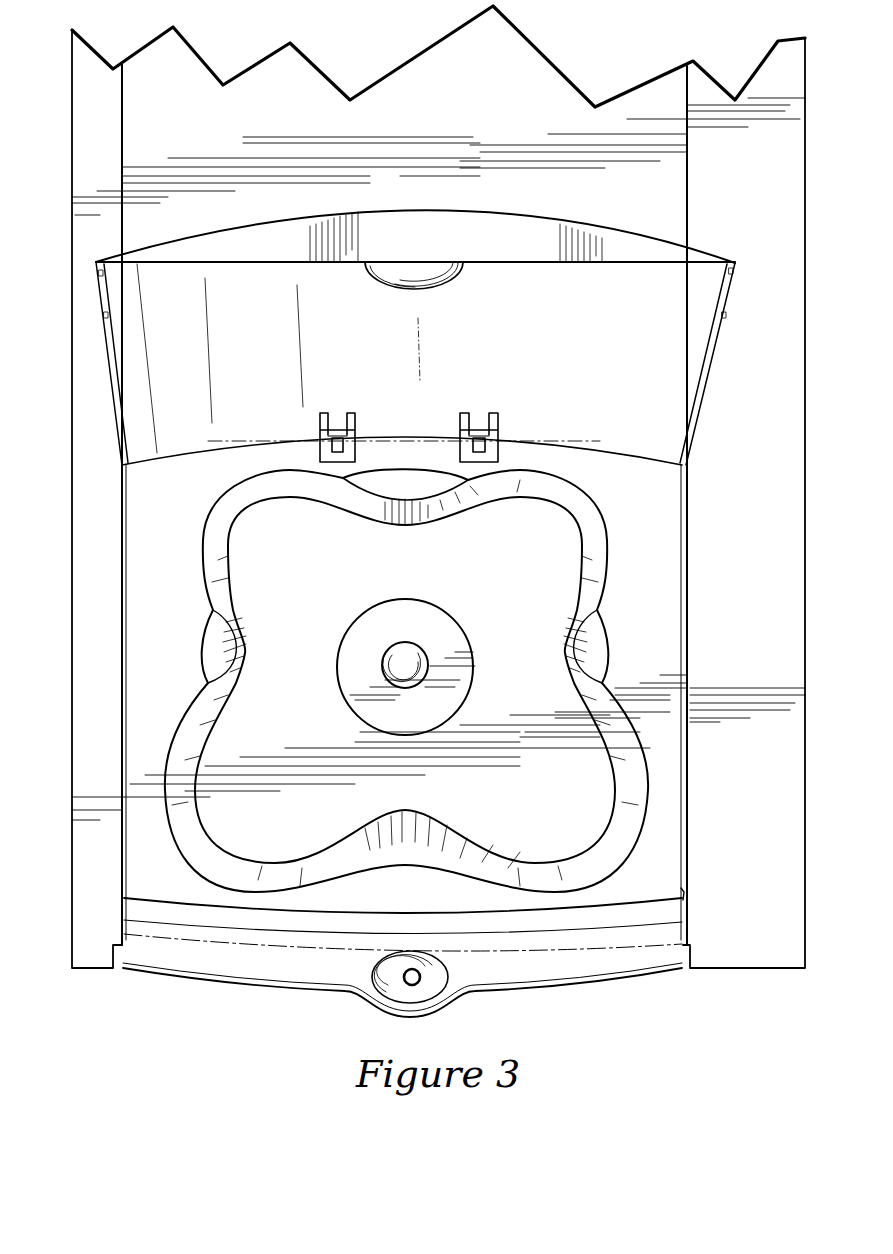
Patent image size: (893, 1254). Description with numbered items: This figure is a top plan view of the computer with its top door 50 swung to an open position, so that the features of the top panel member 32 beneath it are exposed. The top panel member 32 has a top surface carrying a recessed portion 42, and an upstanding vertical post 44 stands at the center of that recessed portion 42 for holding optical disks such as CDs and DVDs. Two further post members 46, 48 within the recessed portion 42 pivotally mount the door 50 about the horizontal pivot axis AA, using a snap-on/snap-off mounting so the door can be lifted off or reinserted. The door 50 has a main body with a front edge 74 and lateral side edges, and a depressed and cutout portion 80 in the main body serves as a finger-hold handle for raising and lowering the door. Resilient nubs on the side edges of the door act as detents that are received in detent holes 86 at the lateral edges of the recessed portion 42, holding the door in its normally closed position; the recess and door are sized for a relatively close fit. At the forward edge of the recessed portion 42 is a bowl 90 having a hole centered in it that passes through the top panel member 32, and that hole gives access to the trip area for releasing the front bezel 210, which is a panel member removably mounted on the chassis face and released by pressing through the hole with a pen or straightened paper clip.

The top panel member 32 is at (412, 119).
The top door 50 is at (268, 205).
The depressed and cutout portion 80 is at (405, 273).
The front edge 74 is at (486, 266).
The horizontal pivot axis AA is at (594, 441).
The post member 48 is at (500, 452).
The post member 46 is at (318, 450).
The recessed portion 42 is at (656, 603).
The upstanding vertical post 44 is at (405, 653).
The front bezel 210 is at (192, 980).
The bowl 90 is at (440, 970).
The detent hole 86 is at (686, 892).